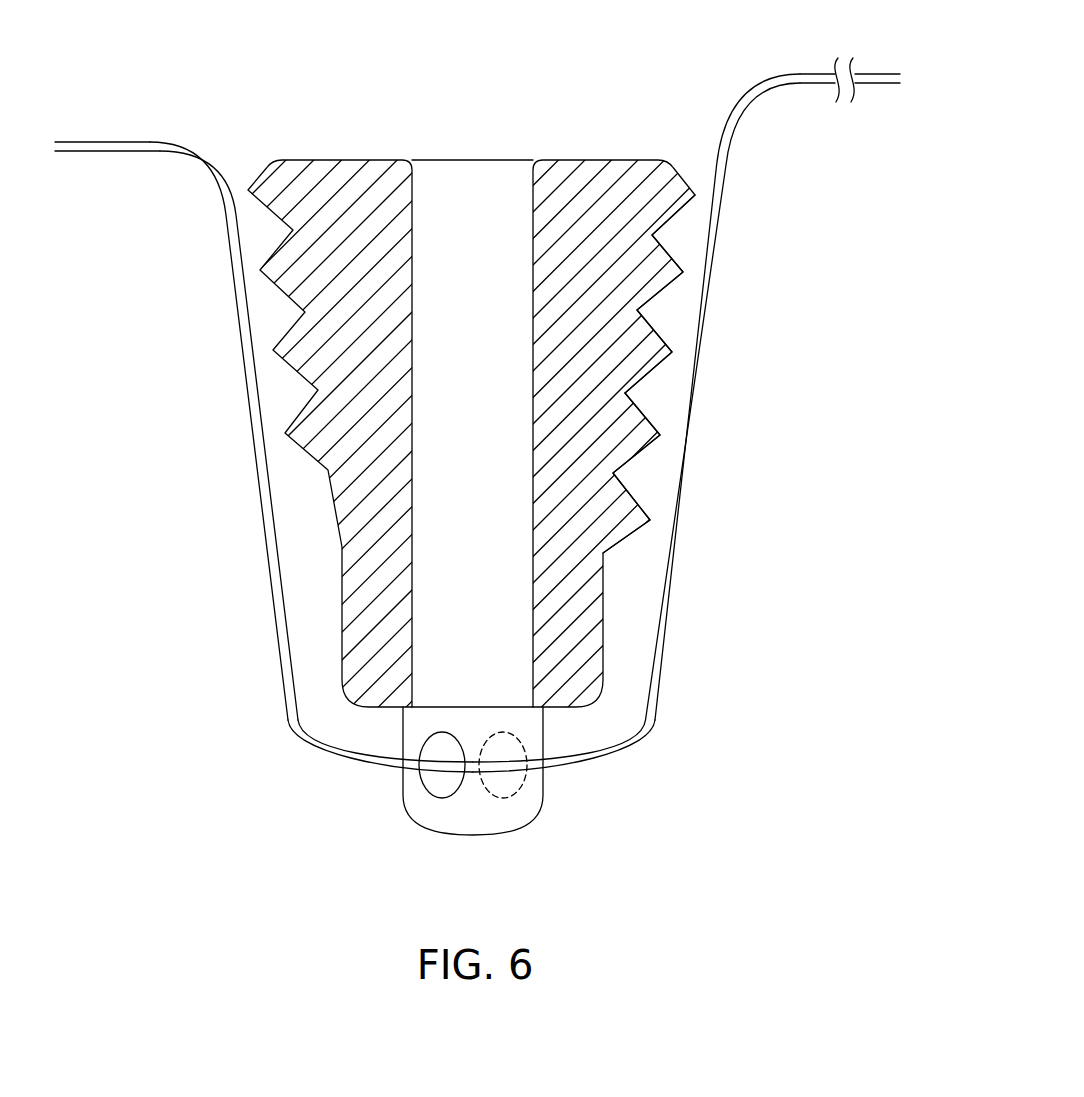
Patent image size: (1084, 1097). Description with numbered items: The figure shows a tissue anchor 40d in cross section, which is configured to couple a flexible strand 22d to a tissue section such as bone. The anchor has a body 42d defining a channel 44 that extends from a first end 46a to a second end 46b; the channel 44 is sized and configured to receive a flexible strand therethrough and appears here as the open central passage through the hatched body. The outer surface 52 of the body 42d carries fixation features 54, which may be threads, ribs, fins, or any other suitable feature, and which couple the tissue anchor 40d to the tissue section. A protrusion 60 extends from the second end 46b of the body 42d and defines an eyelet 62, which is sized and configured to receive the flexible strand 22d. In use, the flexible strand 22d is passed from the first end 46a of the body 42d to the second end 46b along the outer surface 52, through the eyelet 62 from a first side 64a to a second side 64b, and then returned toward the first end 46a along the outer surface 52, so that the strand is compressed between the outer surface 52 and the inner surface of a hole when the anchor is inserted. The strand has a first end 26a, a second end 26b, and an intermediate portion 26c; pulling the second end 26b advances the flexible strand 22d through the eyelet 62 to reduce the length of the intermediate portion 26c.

The tissue anchor 40d is at (542, 454).
The channel 44 is at (452, 193).
The first end 46a is at (578, 128).
The second end 46b is at (558, 825).
The body 42d is at (542, 524).
The outer surface 52 is at (655, 334).
The fixation features 54 is at (660, 435).
The flexible strand 22d is at (501, 444).
The first end of the flexible strand 26a is at (870, 73).
The second end of the flexible strand 26b is at (108, 142).
The intermediate portion of the flexible strand 26c is at (818, 73).
The protrusion 60 is at (425, 790).
The eyelet 62 is at (464, 797).
The first side of the eyelet 64a is at (557, 778).
The second side of the eyelet 64b is at (378, 795).